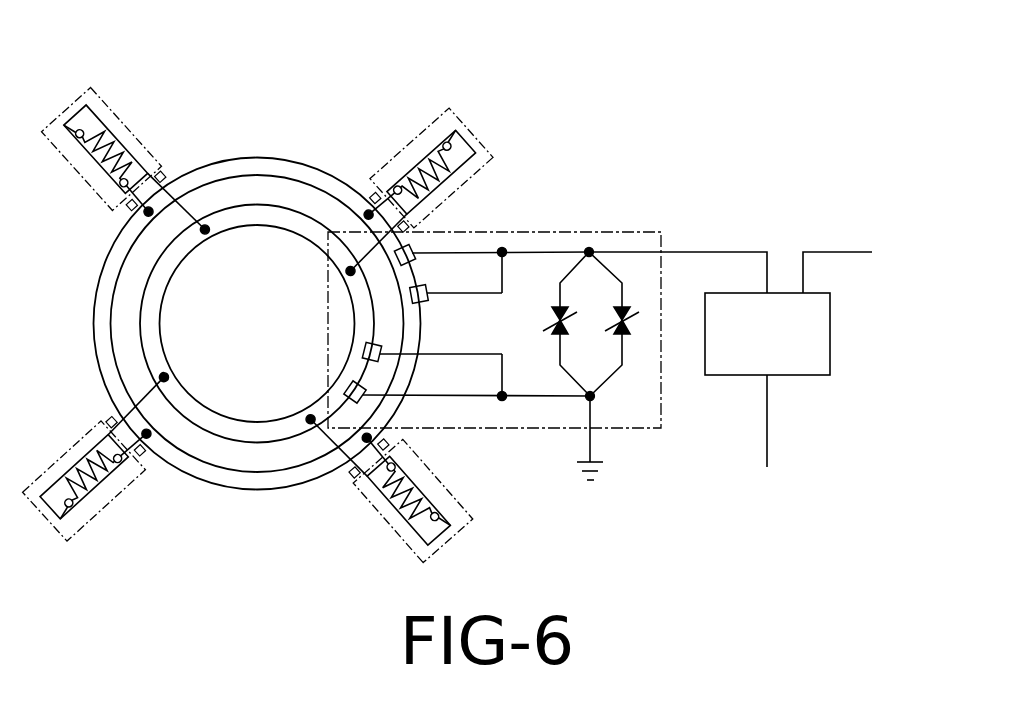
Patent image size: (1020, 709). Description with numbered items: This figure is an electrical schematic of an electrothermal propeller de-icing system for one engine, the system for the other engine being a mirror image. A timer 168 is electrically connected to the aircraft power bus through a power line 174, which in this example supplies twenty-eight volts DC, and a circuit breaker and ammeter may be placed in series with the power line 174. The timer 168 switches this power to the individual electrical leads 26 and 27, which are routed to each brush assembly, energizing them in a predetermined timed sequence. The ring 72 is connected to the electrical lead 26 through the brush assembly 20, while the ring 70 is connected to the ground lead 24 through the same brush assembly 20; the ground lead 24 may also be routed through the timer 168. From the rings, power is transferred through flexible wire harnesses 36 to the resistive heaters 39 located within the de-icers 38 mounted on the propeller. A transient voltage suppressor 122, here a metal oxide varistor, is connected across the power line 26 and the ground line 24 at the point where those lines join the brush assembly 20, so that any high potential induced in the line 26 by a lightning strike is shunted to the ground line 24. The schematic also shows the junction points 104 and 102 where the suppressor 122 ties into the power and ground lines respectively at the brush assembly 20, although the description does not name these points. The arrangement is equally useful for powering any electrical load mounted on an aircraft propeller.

The brush assembly 20 is at (538, 312).
The ground lead 24 is at (591, 440).
The electrical lead 26 is at (740, 252).
The electrical lead 27 is at (837, 252).
The flexible wire harness 36 is at (129, 179).
The de-icer 38 is at (102, 149).
The resistive heater 39 is at (108, 152).
The ring 70 is at (233, 209).
The ring 72 is at (308, 163).
The junction node 102 is at (590, 397).
The junction node 104 is at (589, 251).
The transient voltage suppressor 122 is at (627, 313).
The timer 168 is at (723, 367).
The power line 174 is at (768, 424).